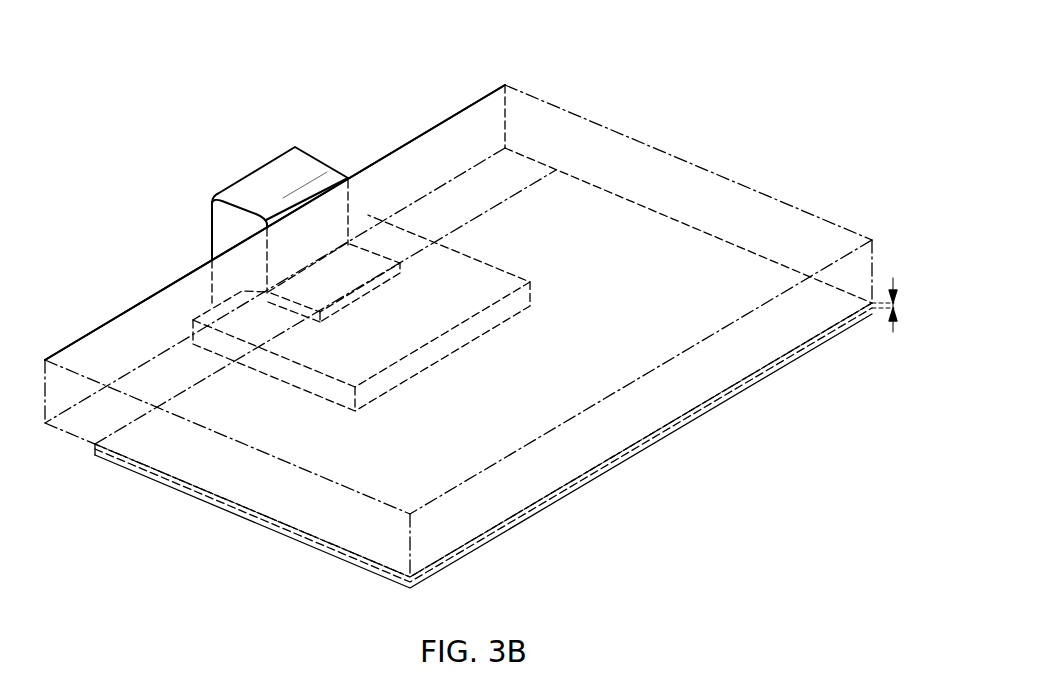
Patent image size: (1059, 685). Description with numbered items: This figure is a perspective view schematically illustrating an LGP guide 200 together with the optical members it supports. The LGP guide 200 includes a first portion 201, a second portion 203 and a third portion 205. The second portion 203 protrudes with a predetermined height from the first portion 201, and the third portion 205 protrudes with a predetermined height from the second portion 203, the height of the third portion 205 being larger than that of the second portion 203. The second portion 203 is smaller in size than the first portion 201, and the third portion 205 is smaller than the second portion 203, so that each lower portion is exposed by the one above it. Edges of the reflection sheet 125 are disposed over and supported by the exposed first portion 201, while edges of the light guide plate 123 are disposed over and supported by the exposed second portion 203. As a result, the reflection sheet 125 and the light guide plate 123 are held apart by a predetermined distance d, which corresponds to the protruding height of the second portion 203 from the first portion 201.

The LGP guide 200 is at (344, 117).
The light guide plate 123 is at (607, 150).
The reflection sheet 125 is at (717, 257).
The predetermined distance d is at (890, 305).
The first portion 201 is at (473, 291).
The second portion 203 is at (368, 263).
The third portion 205 is at (342, 198).